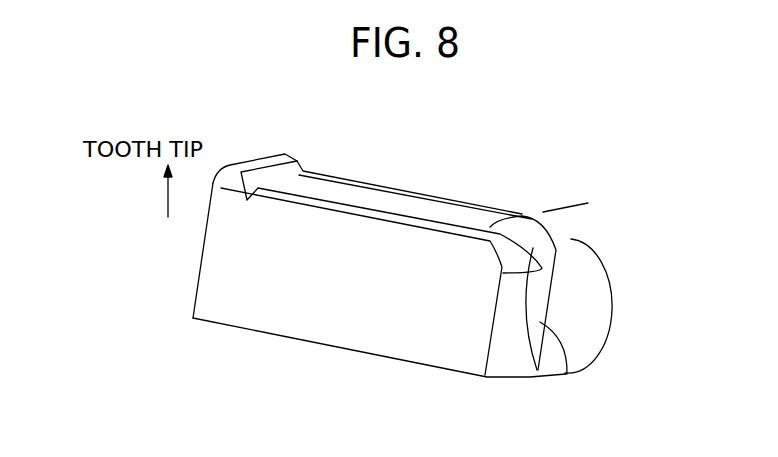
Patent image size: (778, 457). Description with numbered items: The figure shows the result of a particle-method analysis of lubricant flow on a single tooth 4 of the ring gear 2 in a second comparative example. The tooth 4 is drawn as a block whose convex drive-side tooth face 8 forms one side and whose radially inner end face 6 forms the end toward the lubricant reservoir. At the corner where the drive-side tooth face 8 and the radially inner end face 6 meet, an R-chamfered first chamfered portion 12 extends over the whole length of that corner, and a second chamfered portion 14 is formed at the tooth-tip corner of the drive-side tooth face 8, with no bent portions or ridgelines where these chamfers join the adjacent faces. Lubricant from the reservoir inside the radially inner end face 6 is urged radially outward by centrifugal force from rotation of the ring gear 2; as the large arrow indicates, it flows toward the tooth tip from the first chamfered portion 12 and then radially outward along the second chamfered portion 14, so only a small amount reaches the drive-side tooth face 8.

The ring gear 2 is at (391, 217).
The teeth 4 is at (270, 154).
The radially inner end face 6 is at (575, 302).
The drive-side tooth face 8 is at (217, 263).
The first chamfered portion 12 is at (572, 378).
The second chamfered portion 14 is at (233, 176).